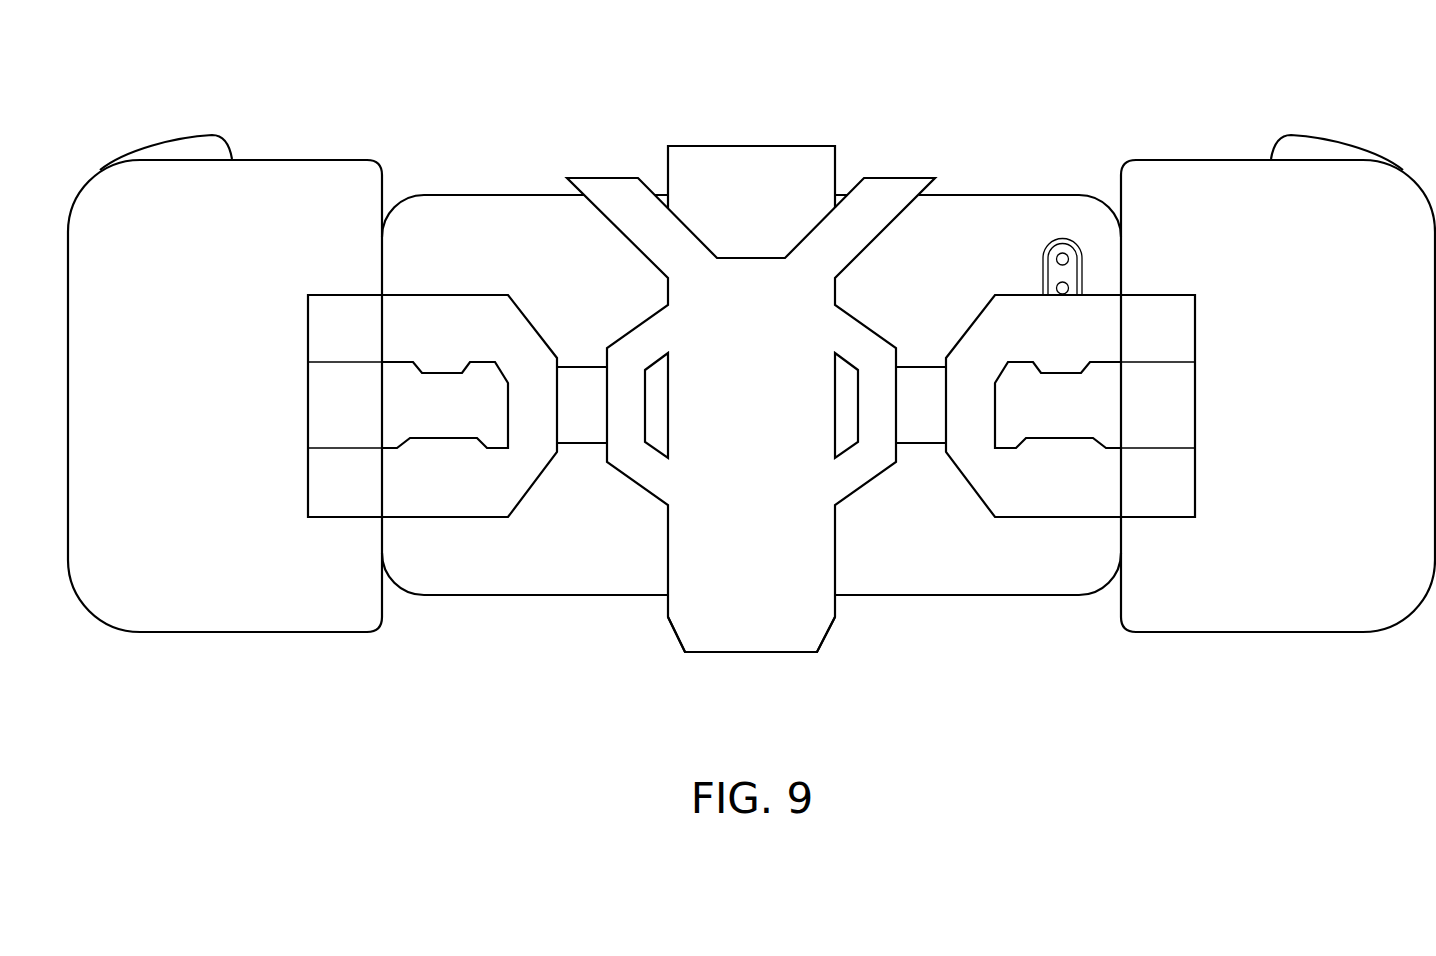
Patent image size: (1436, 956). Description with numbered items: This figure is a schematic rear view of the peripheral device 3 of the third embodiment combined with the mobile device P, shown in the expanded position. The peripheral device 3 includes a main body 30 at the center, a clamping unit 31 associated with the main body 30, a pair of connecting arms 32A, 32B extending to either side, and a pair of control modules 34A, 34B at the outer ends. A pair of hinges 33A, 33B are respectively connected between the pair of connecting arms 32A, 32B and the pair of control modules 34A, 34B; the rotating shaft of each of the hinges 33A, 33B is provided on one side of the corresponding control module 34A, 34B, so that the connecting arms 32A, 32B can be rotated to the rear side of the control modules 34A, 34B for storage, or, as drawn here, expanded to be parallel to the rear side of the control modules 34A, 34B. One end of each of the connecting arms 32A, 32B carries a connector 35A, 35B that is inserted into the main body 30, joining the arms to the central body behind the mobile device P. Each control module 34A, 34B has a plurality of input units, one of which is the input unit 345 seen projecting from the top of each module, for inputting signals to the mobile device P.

The peripheral device 3 is at (97, 128).
The input unit 345 is at (198, 152).
The control module 34A is at (295, 160).
The control module 34B is at (1187, 160).
The mobile device P is at (497, 193).
The clamping unit 31 is at (748, 165).
The main body 30 is at (876, 330).
The connector 35A is at (586, 385).
The connector 35B is at (918, 428).
The connecting arm 32A is at (455, 493).
The connecting arm 32B is at (1047, 493).
The hinge 33A is at (330, 493).
The hinge 33B is at (1164, 493).